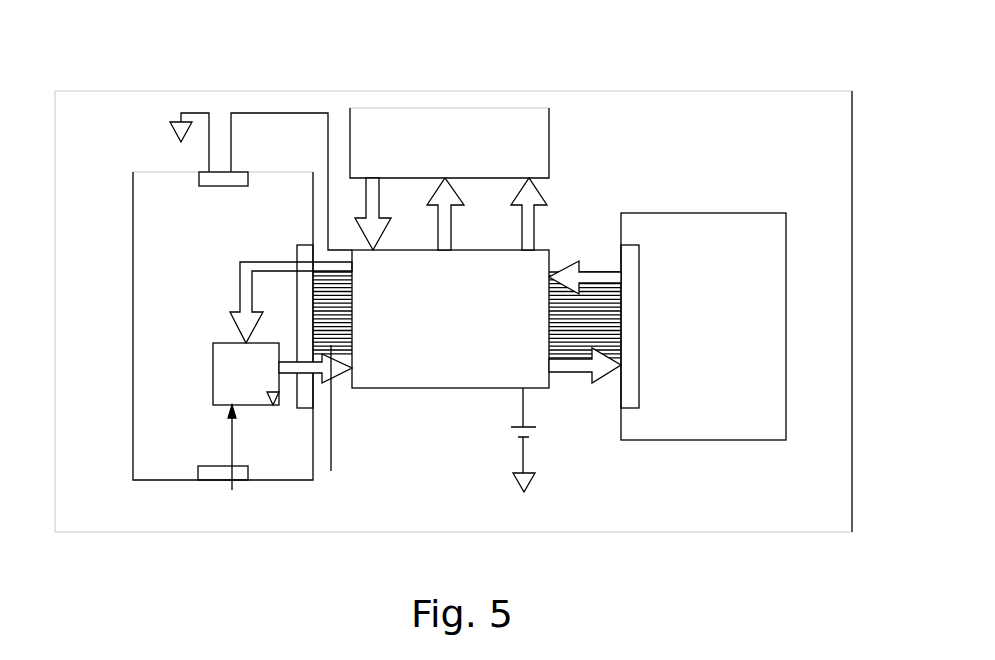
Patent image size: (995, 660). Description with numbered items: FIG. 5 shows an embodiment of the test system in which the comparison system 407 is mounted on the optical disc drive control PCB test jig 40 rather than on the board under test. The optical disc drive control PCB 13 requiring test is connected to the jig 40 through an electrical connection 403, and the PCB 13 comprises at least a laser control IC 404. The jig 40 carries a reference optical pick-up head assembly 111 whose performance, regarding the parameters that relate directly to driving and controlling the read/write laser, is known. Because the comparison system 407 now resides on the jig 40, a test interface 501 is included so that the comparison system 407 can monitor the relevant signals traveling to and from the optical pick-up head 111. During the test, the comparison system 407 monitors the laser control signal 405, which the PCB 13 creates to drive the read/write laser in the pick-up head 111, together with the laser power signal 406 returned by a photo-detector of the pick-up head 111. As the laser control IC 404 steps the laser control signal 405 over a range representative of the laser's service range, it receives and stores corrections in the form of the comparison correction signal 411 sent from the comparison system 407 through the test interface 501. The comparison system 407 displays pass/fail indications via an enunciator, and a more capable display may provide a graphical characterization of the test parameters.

The optical disc drive control PCB test jig 40 is at (836, 84).
The optical disc drive control PCB 13 is at (133, 462).
The reference optical pick-up head assembly 111 is at (679, 213).
The electrical connection 403 is at (331, 332).
The laser control IC 404 is at (246, 432).
The laser control signal 405 is at (338, 378).
The laser power signal 406 is at (240, 279).
The comparison system 407 is at (460, 108).
The comparison correction signal 411 is at (379, 202).
The test interface 501 is at (408, 389).